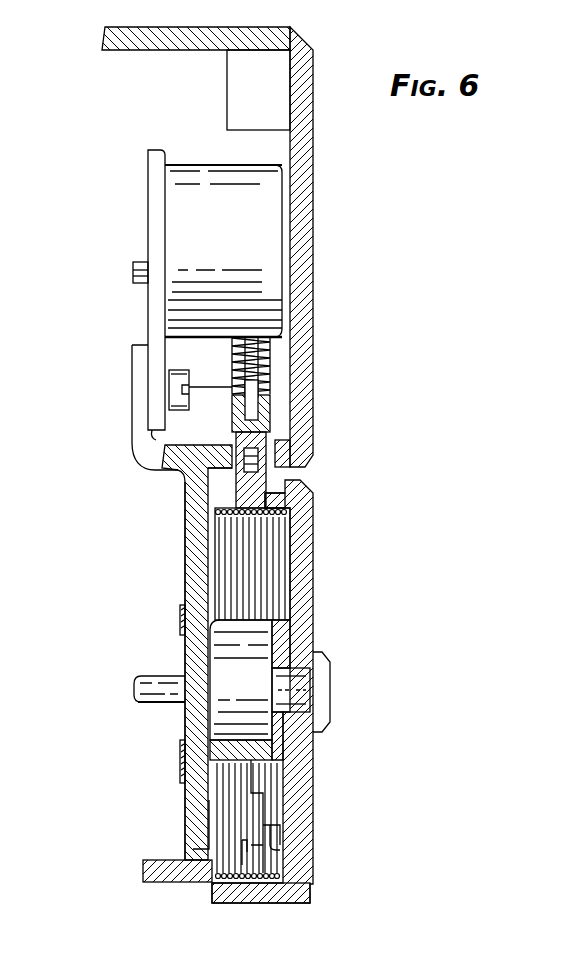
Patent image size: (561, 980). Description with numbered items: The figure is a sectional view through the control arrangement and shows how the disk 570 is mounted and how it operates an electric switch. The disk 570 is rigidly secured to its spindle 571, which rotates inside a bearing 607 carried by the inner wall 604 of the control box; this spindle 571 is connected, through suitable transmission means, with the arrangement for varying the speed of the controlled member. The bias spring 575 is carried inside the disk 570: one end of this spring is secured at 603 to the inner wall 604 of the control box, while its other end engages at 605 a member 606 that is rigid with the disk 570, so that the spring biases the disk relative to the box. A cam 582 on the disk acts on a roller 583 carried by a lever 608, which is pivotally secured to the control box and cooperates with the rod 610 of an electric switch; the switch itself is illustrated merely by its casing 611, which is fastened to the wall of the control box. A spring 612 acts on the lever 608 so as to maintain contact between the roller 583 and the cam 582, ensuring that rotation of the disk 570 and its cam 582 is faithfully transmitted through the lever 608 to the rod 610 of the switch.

The disk 570 is at (300, 780).
The spindle 571 is at (160, 694).
The bias spring 575 is at (259, 870).
The cam 582 is at (300, 481).
The roller 583 is at (283, 441).
The securing point of the bias spring 603 is at (190, 864).
The inner wall 604 is at (192, 829).
The engagement point of the bias spring 605 is at (242, 842).
The member rigid with the disk 606 is at (265, 812).
The bearing 607 is at (252, 630).
The lever 608 is at (232, 415).
The rod 610 is at (272, 357).
The casing 611 is at (263, 276).
The spring 612 is at (272, 374).